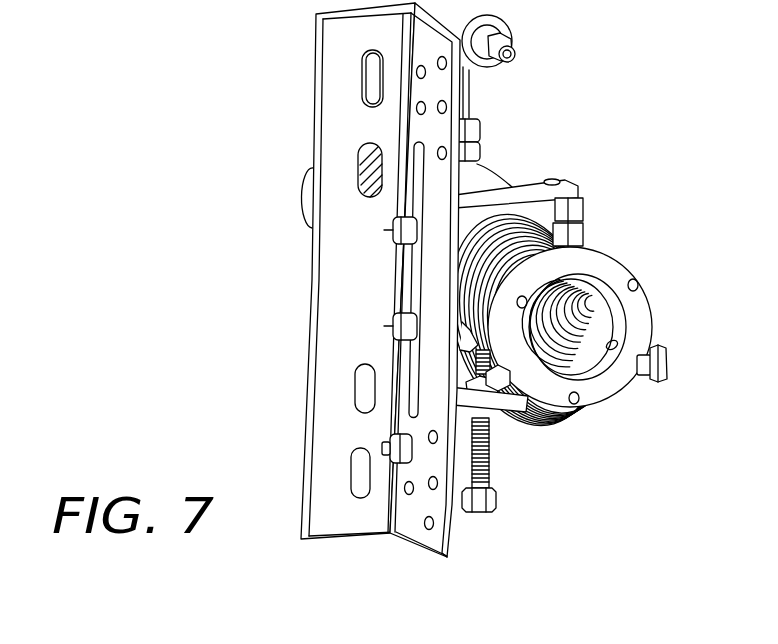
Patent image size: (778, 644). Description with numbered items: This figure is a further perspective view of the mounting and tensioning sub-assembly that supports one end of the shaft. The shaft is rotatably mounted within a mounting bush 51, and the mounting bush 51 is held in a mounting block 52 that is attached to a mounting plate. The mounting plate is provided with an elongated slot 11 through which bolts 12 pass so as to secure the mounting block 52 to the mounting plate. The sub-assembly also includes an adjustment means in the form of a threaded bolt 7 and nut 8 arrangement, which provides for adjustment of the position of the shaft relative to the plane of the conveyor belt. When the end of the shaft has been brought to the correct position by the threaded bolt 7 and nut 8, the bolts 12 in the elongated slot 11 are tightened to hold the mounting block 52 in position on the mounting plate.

The threaded bolt 7 is at (497, 508).
The nut 8 is at (500, 425).
The elongated slot 11 is at (408, 362).
The bolts 12 is at (392, 230).
The mounting bush 51 is at (520, 207).
The mounting block 52 is at (500, 200).